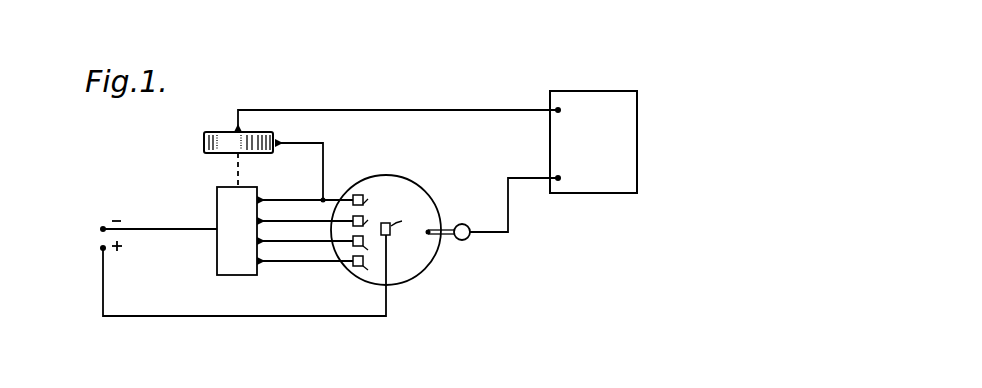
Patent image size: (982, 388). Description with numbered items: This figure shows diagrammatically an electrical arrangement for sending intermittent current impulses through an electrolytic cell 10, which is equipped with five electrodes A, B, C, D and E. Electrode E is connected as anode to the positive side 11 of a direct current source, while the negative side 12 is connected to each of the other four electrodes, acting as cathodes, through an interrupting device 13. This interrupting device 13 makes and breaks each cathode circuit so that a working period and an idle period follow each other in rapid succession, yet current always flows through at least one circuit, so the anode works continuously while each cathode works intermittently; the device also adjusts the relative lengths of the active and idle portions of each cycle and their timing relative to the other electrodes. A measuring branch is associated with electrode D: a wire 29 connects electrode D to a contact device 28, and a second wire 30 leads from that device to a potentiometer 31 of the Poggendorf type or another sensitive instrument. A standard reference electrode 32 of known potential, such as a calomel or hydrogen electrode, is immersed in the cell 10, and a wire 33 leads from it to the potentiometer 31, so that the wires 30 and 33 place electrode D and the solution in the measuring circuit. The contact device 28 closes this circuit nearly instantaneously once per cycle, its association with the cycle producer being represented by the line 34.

The electrolytic cell 10 is at (402, 196).
The positive side 11 is at (103, 249).
The negative side 12 is at (103, 228).
The interrupting device 13 is at (237, 231).
The contact device 28 is at (274, 136).
The wire 29 is at (323, 168).
The second wire 30 is at (447, 109).
The potentiometer 31 is at (607, 142).
The standard reference electrode 32 is at (458, 240).
The wire 33 is at (520, 178).
The line 34 is at (240, 168).